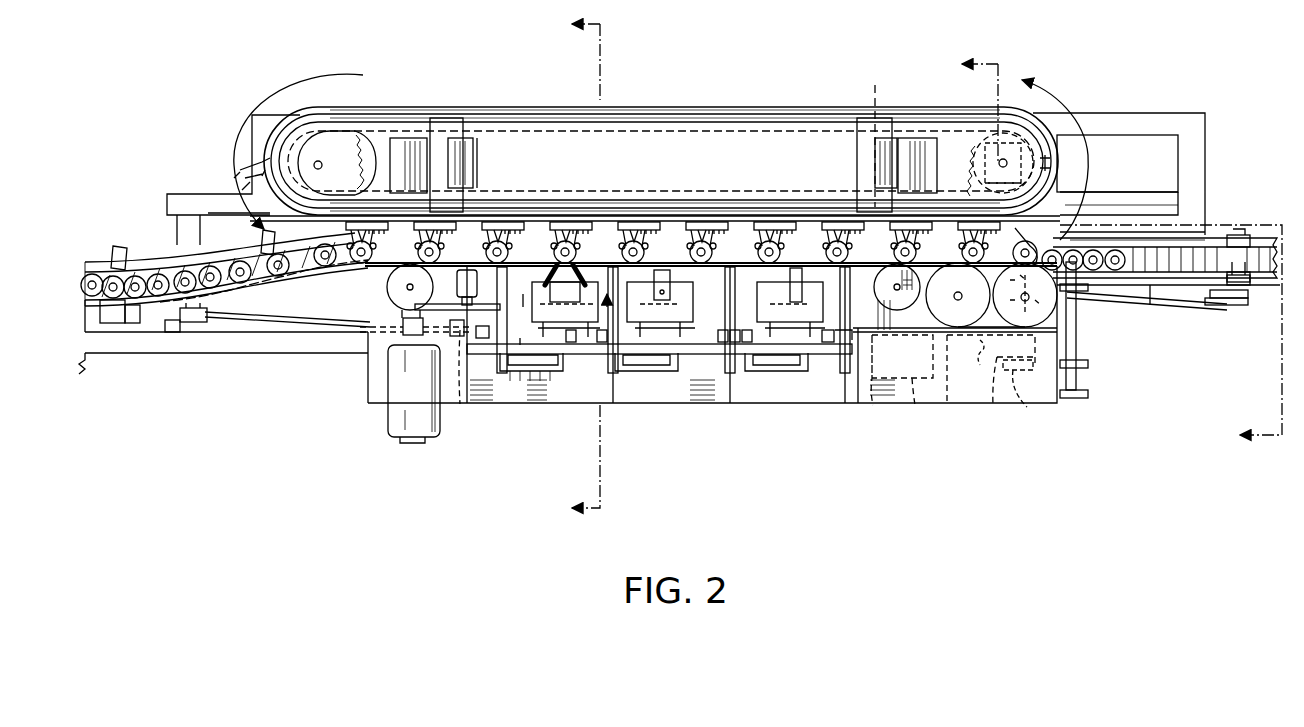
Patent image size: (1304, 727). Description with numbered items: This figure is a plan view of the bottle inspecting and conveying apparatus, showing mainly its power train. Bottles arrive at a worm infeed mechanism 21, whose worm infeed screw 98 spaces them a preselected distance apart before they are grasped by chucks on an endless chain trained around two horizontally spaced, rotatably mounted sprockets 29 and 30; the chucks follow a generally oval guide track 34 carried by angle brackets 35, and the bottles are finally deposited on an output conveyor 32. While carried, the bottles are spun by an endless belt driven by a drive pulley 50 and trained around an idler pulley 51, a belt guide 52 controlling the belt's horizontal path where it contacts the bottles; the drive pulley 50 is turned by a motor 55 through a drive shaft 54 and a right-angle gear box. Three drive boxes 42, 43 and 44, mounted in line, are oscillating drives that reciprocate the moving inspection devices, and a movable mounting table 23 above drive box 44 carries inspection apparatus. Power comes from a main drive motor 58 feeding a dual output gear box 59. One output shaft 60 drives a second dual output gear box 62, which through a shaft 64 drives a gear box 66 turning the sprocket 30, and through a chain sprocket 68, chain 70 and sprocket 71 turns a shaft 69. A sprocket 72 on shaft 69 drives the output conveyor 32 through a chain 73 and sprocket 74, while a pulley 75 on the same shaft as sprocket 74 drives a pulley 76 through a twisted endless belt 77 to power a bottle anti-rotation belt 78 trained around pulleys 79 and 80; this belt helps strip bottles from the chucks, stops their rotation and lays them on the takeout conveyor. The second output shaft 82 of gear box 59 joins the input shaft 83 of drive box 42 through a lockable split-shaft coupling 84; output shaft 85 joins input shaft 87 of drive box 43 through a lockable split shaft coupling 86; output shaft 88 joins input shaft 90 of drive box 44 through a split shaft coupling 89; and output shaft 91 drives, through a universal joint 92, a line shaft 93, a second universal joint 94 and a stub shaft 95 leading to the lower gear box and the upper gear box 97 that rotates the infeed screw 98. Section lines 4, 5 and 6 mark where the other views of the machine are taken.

The section line 4- 4 is at (565, 310).
The section line 5- 5 is at (1110, 251).
The section line 6- 6 is at (572, 262).
The worm infeed mechanism 21 is at (220, 328).
The gripper fingers 23 is at (561, 294).
The sprocket 29 is at (360, 162).
The sprocket 30 is at (997, 164).
The output conveyor 32 is at (1202, 263).
The guide track 34 is at (684, 107).
The angle brackets 35 is at (412, 176).
The drive box 42 is at (778, 350).
The drive box 43 is at (655, 350).
The drive box 44 is at (528, 375).
The drive pulley 50 is at (408, 297).
The idler pulley 51 is at (897, 297).
The belt guide 52 is at (886, 263).
The drive shaft 54 is at (403, 333).
The motor 55 is at (426, 397).
The main drive motor 58 is at (887, 134).
The dual output gear box 59 is at (910, 405).
The output shaft 60 is at (989, 383).
The second dual output gear box 62 is at (1008, 394).
The shaft 64 is at (991, 180).
The gear box 66 is at (1064, 154).
The chain sprocket 68 is at (1027, 407).
The shaft 69 is at (1077, 338).
The chain 70 is at (1065, 400).
The sprocket 71 is at (1090, 365).
The sprocket 72 is at (1080, 310).
The chain 73 is at (1185, 308).
The sprocket 74 is at (1255, 298).
The pulley 75 is at (1220, 308).
The pulley 76 is at (1122, 318).
The twisted endless belt 77 is at (1162, 300).
The bottle anti-rotation belt 78 is at (955, 351).
The pulley 79 is at (1025, 295).
The pulley 80 is at (968, 289).
The second output shaft 82 is at (901, 383).
The input shaft 83 is at (822, 345).
The lockable split-shaft coupling 84 is at (830, 342).
The output shaft 85 is at (732, 348).
The lockable split shaft coupling 86 is at (718, 348).
The input shaft 87 is at (708, 345).
The output shaft 88 is at (602, 342).
The split shaft coupling 89 is at (572, 342).
The input shaft 90 is at (527, 360).
The output shaft 91 is at (484, 340).
The universal joint 92 is at (468, 381).
The line shaft 93 is at (288, 330).
The second universal joint 94 is at (200, 324).
The stub shaft 95 is at (172, 332).
The upper gear box 97 is at (100, 357).
The worm infeed screw 98 is at (298, 283).